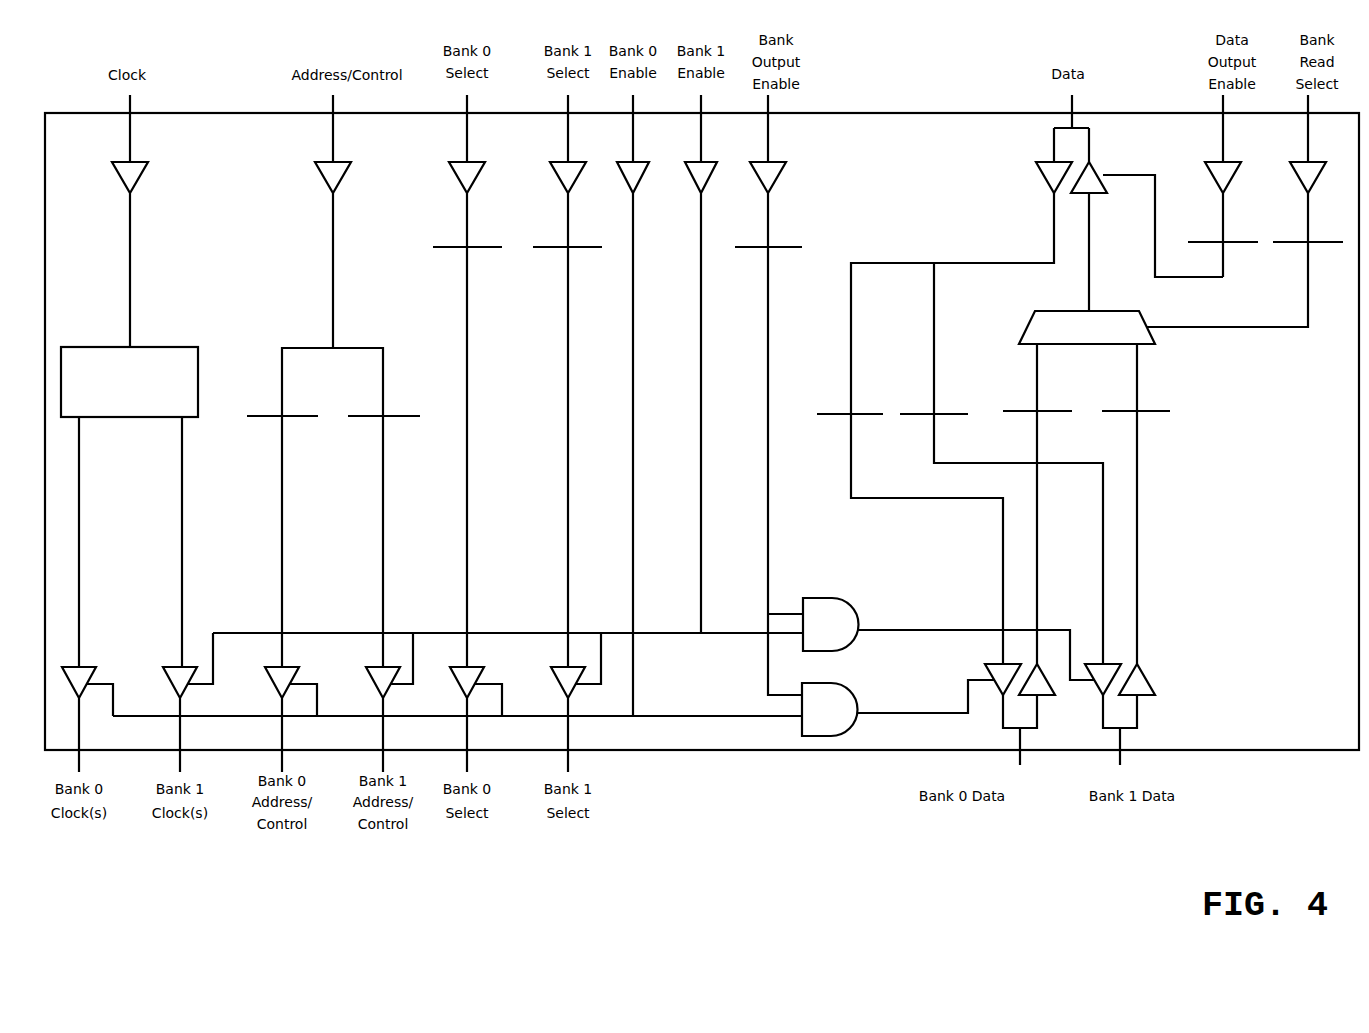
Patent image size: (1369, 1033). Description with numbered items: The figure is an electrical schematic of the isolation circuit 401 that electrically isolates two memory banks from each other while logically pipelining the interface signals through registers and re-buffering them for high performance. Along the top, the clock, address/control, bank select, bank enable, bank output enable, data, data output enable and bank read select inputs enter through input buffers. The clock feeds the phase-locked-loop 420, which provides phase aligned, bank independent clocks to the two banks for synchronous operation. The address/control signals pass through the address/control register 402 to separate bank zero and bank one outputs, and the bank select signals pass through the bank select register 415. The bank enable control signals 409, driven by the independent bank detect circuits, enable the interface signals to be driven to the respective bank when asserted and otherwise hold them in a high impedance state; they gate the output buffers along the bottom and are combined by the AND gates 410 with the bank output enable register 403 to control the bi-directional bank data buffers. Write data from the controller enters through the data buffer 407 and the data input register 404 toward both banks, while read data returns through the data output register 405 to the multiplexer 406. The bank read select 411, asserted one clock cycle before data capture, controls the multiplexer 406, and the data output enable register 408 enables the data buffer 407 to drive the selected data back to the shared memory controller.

The electrical isolation circuit 401 is at (702, 431).
The address/control register 402 is at (341, 560).
The bank output enable register 403 is at (775, 395).
The data input register 404 is at (960, 428).
The data output register 405 is at (1095, 504).
The multiplexer 406 is at (1163, 268).
The data buffer 407 is at (1129, 203).
The data output enable register 408 is at (1230, 186).
The bank enable control signals 409 is at (674, 405).
The AND gates 410 is at (948, 667).
The bank read select 411 is at (1315, 168).
The bank select register 415 is at (525, 433).
The phase-locked-loop 420 is at (129, 368).